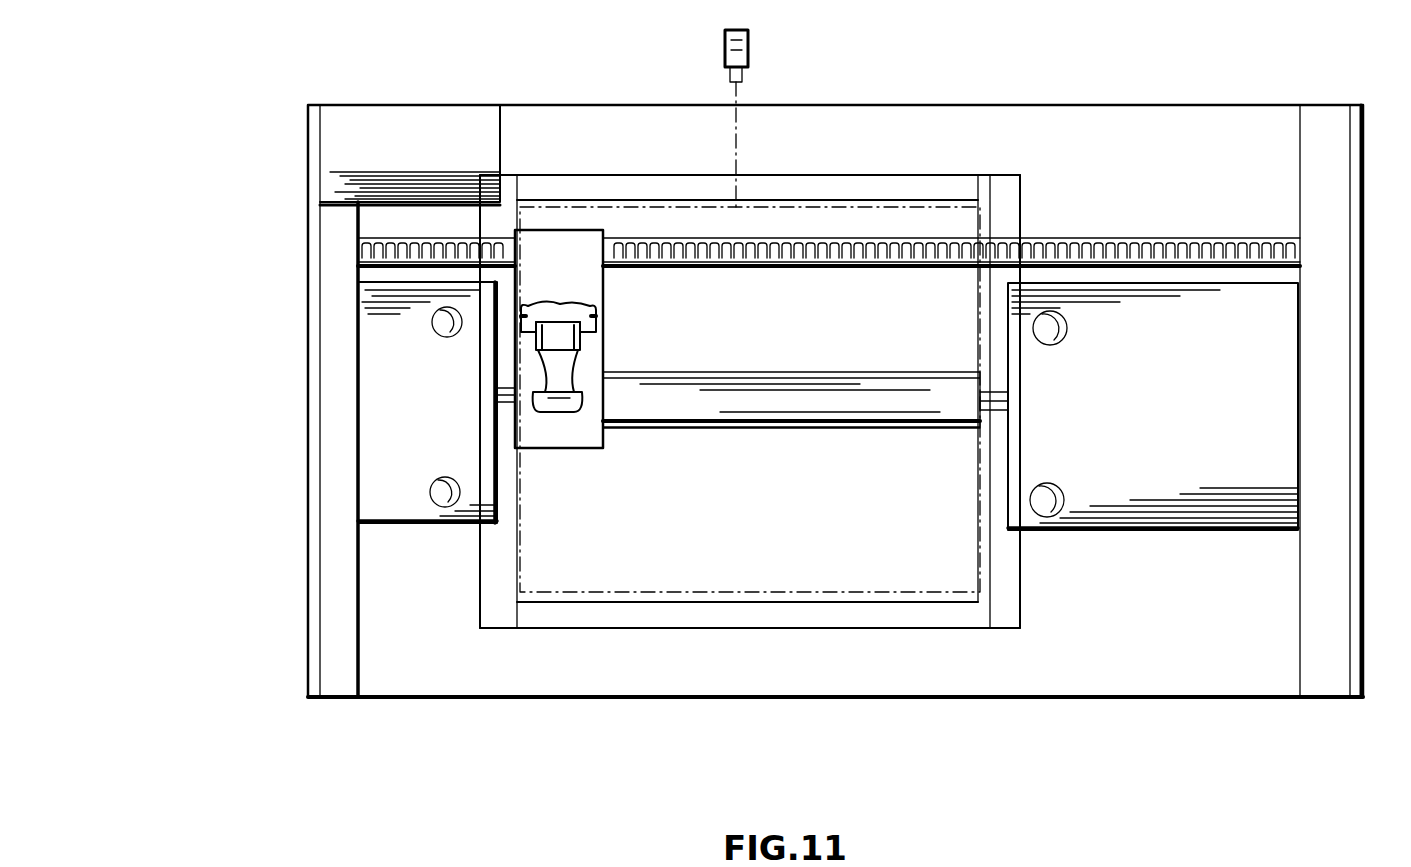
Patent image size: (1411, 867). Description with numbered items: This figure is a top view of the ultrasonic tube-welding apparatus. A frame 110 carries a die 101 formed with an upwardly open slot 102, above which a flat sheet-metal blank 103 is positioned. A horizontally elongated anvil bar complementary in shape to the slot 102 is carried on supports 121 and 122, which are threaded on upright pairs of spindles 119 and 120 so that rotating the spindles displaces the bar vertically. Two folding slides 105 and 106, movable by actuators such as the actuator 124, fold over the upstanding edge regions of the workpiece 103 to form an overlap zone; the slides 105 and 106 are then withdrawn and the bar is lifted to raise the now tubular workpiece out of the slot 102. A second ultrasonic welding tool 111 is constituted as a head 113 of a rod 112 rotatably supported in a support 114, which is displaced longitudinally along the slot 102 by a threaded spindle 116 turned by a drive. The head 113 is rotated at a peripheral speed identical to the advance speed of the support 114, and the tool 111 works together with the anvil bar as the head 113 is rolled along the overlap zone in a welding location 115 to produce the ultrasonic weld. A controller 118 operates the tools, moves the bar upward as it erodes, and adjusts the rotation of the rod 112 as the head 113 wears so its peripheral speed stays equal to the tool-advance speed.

The die 101 is at (950, 560).
The slot 102 is at (773, 440).
The sheet-metal blank 103 is at (943, 203).
The folding slide 105 is at (683, 618).
The folding slide 106 is at (872, 183).
The frame 110 is at (1193, 660).
The ultrasonic welding tool 111 is at (556, 208).
The rod 112 is at (605, 346).
The head 113 is at (555, 410).
The support 114 is at (600, 318).
The welding location 115 is at (528, 442).
The threaded spindle 116 is at (647, 240).
The controller 118 is at (342, 152).
The spindles 119 is at (438, 490).
The spindles 120 is at (1062, 486).
The support 121 is at (445, 418).
The support 122 is at (1212, 462).
The actuator 124 is at (750, 48).